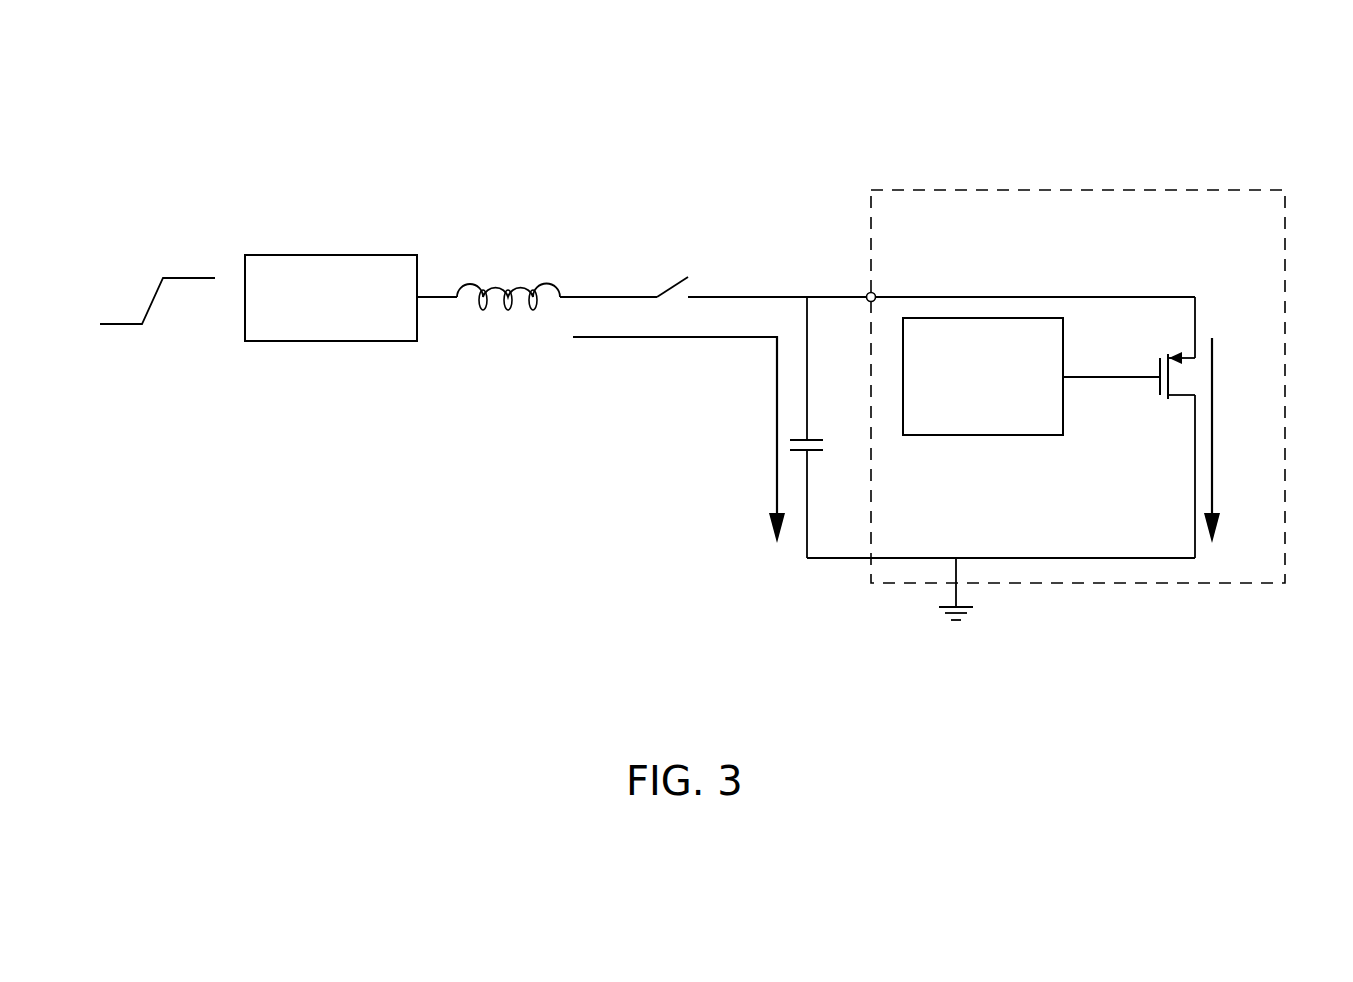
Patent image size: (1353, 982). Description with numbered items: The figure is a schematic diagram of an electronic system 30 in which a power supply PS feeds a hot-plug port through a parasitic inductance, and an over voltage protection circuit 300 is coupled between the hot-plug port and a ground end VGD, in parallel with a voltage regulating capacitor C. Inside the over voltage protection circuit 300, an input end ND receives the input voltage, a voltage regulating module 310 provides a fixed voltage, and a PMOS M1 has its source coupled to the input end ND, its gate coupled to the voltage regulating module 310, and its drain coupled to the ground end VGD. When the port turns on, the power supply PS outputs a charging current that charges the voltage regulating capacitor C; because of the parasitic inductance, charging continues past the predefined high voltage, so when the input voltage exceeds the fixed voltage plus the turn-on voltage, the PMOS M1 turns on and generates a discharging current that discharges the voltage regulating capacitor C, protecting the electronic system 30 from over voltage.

The electronic system 30 is at (1182, 98).
The over voltage protection circuit 300 is at (988, 190).
The voltage regulating module 310 is at (978, 436).
The power supply PS is at (330, 255).
The voltage regulating capacitor C is at (820, 427).
The input end ND is at (876, 292).
The PMOS M1 is at (1177, 404).
The ground end VGD is at (957, 610).